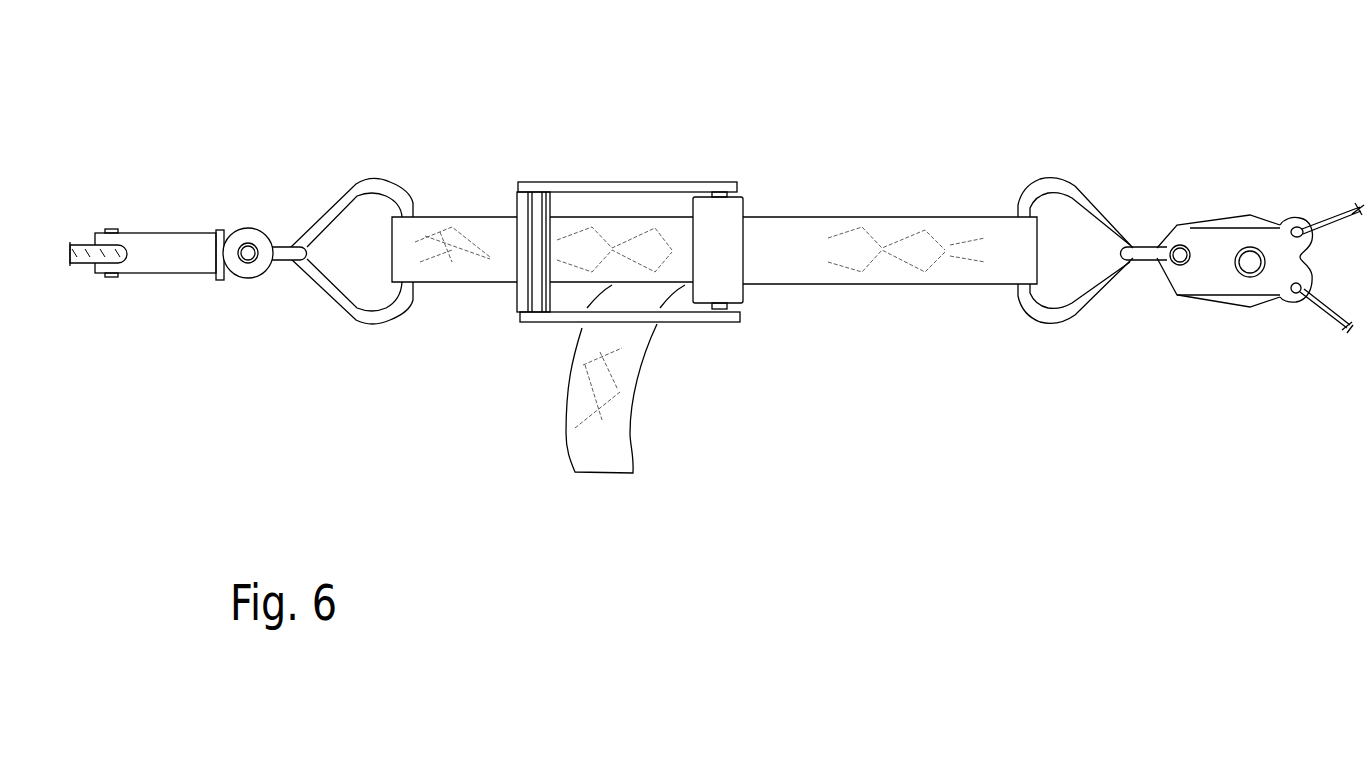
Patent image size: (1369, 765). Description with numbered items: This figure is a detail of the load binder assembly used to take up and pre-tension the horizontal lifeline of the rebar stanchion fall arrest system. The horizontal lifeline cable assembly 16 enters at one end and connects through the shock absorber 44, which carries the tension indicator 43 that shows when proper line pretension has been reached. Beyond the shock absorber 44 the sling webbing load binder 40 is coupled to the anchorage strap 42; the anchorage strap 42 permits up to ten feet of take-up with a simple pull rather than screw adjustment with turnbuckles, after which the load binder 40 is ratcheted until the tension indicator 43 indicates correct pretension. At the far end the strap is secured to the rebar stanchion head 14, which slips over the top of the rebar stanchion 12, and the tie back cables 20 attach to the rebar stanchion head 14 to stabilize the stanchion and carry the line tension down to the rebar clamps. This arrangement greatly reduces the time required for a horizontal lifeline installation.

The rebar stanchion 12 is at (1233, 263).
The rebar stanchion head 14 is at (1190, 223).
The horizontal lifeline cable assembly 16 is at (80, 240).
The tie back cables 20 is at (1328, 217).
The sling webbing load binder 40 is at (597, 182).
The anchorage strap 42 is at (832, 217).
The tension indicator 43 is at (223, 230).
The shock absorber 44 is at (163, 232).